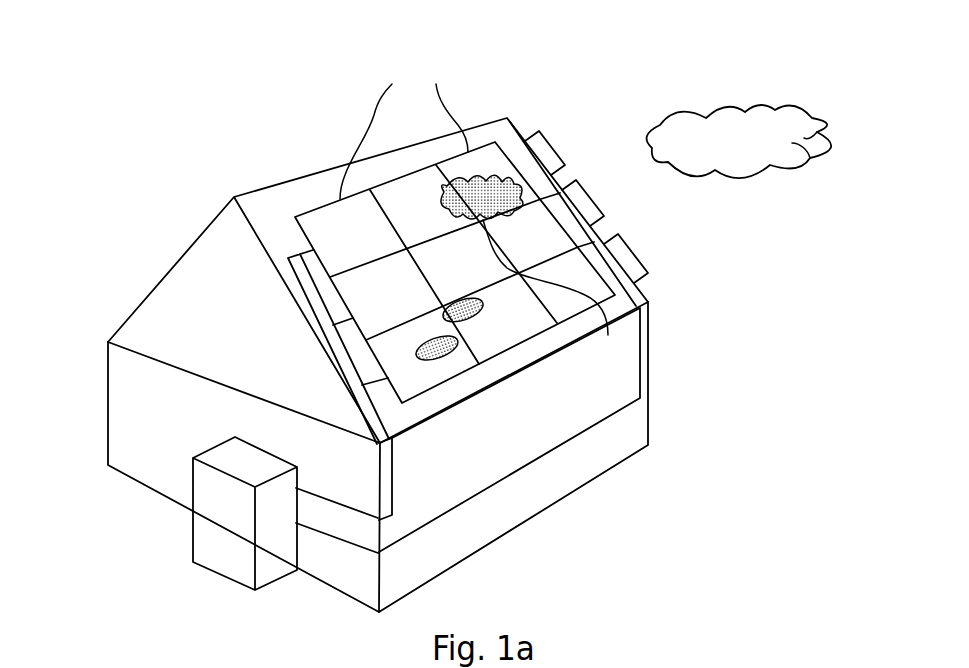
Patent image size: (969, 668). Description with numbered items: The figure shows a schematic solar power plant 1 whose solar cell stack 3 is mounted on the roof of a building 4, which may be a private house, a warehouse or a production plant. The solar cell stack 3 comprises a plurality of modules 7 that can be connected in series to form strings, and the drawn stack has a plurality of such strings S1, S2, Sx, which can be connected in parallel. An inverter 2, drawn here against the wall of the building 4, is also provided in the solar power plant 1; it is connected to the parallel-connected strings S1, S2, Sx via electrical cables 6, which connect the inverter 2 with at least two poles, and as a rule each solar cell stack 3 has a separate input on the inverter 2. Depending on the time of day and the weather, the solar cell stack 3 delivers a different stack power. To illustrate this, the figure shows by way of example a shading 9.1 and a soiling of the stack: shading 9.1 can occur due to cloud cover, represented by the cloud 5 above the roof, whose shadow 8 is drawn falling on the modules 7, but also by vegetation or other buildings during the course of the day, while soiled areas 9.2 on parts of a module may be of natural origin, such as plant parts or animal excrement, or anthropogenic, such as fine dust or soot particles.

The solar power plant 1 is at (233, 155).
The inverter 2 is at (245, 513).
The solar cell stack 3 is at (505, 120).
The building 4 is at (649, 380).
The cloud 5 is at (782, 106).
The electrical cables 6 is at (393, 478).
The modules 7 is at (404, 124).
The shadow 8 is at (482, 197).
The shading 9.1 is at (466, 320).
The soiled areas 9.2 is at (455, 358).
The string S1 is at (568, 142).
The string S2 is at (605, 192).
The string Sx is at (647, 247).